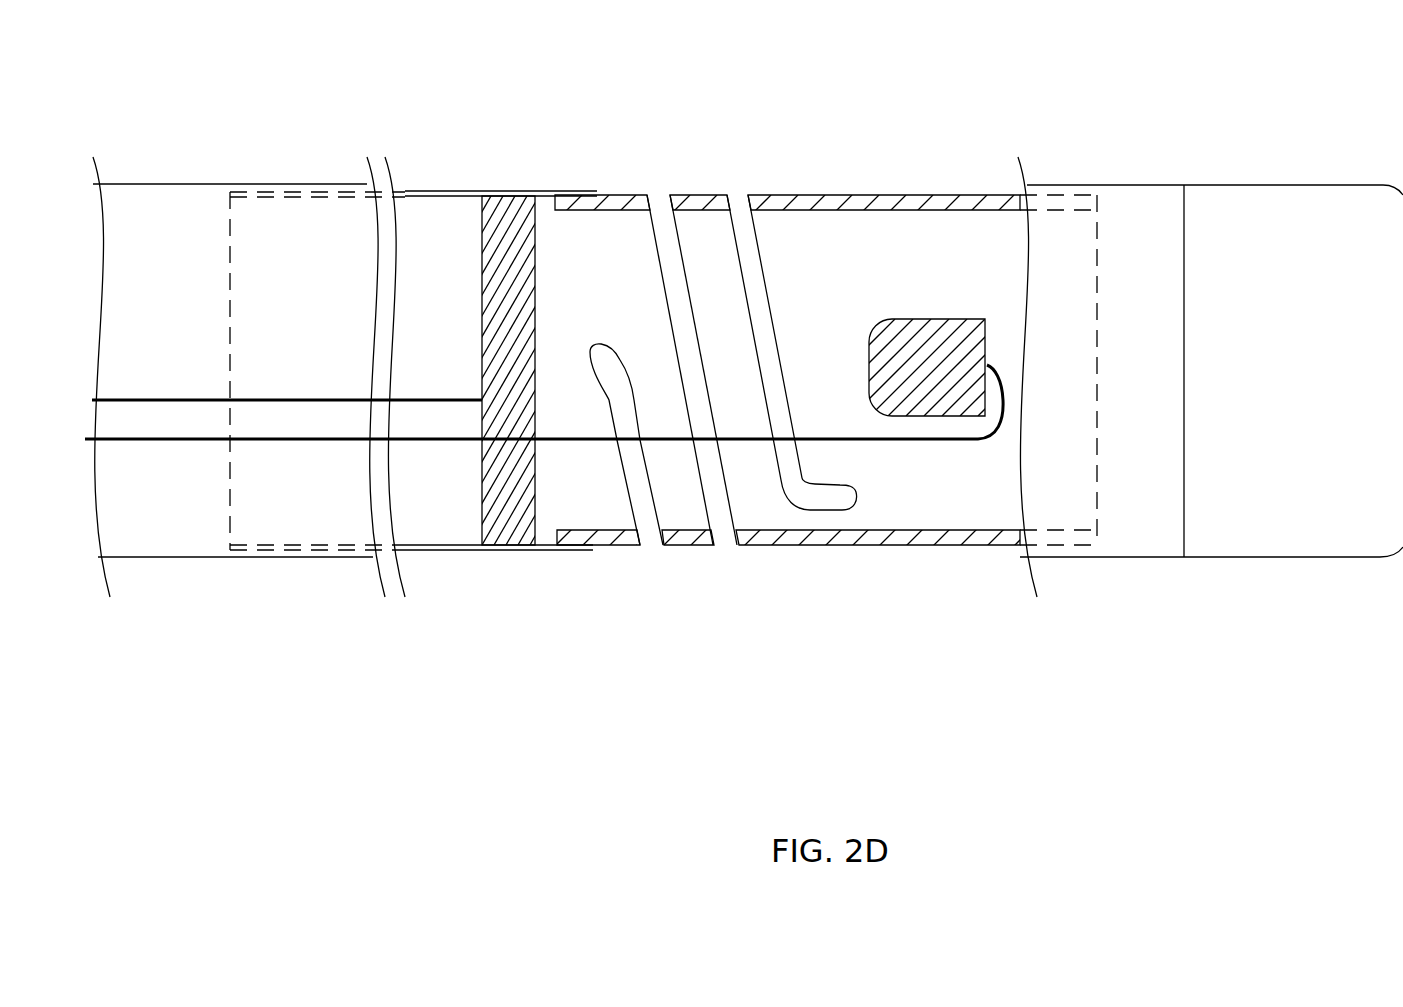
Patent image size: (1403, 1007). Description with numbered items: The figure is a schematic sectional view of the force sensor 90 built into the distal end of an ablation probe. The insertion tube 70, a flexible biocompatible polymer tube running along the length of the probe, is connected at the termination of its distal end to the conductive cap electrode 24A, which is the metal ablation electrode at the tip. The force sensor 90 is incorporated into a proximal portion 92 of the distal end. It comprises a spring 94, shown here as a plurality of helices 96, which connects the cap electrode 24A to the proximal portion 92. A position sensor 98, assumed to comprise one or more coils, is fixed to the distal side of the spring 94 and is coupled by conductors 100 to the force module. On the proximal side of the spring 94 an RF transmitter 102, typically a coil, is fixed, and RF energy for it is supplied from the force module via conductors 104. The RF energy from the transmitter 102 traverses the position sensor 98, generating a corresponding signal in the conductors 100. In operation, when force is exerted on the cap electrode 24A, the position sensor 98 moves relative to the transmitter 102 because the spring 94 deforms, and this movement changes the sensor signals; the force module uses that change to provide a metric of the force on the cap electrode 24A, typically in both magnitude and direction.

The insertion tube 70 is at (147, 557).
The conductive cap electrode 24A is at (1312, 557).
The force sensor 90 is at (432, 117).
The proximal portion 92 is at (230, 557).
The spring 94 is at (945, 545).
The helices 96 is at (737, 195).
The position sensor 98 is at (930, 320).
The conductors 100 is at (305, 441).
The RF transmitter 102 is at (535, 312).
The conductors 104 is at (318, 398).